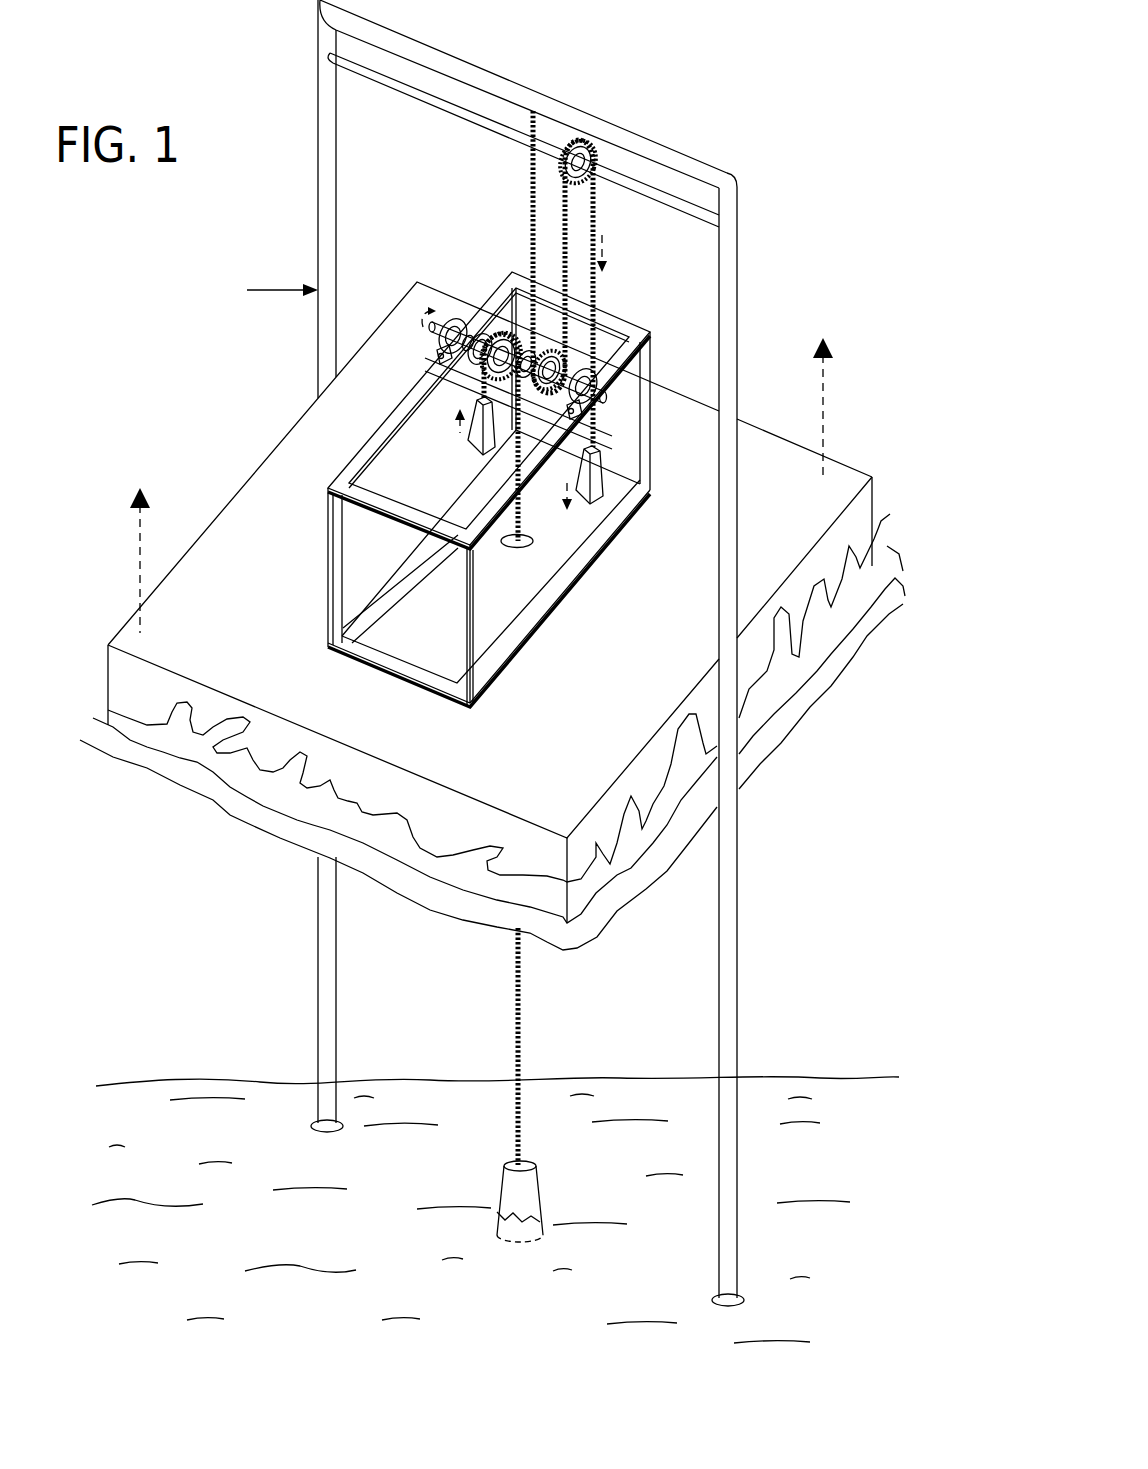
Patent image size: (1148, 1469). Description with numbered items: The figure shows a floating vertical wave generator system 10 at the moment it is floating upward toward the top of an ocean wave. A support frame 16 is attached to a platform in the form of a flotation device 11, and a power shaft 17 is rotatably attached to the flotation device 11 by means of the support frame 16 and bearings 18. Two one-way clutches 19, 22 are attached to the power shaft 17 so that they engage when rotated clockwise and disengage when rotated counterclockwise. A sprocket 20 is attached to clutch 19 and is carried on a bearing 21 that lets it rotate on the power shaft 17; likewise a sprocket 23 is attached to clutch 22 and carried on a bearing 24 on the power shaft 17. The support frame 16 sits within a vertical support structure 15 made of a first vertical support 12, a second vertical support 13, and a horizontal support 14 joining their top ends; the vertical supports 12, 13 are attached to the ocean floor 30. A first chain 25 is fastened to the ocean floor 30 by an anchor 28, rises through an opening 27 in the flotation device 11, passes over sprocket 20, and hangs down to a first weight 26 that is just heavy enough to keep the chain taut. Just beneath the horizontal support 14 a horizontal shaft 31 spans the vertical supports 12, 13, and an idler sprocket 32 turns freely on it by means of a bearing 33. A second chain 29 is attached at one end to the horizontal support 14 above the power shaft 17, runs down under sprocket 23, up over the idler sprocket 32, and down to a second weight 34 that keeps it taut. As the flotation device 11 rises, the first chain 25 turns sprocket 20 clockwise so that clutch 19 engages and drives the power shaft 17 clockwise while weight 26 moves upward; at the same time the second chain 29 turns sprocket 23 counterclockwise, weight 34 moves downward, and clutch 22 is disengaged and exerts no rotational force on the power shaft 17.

The floating vertical wave generator system 10 is at (690, 96).
The flotation device 11 is at (270, 485).
The first vertical support 12 is at (318, 137).
The second vertical support 13 is at (737, 283).
The horizontal support 14 is at (710, 172).
The vertical support structure 15 is at (264, 290).
The support frame 16 is at (335, 550).
The power shaft 17 is at (606, 398).
The bearings 18 is at (448, 322).
The one-way clutch 19 is at (472, 363).
The sprocket 20 is at (500, 340).
The bearing 21 is at (470, 350).
The one-way clutch 22 is at (520, 347).
The sprocket 23 is at (556, 352).
The bearing 24 is at (547, 400).
The first chain 25 is at (483, 388).
The first weight 26 is at (470, 441).
The opening 27 is at (540, 558).
The anchor 28 is at (535, 1210).
The second chain 29 is at (530, 174).
The ocean floor 30 is at (610, 1070).
The horizontal shaft 31 is at (658, 192).
The idler sprocket 32 is at (580, 143).
The bearing 33 is at (594, 153).
The second weight 34 is at (600, 488).